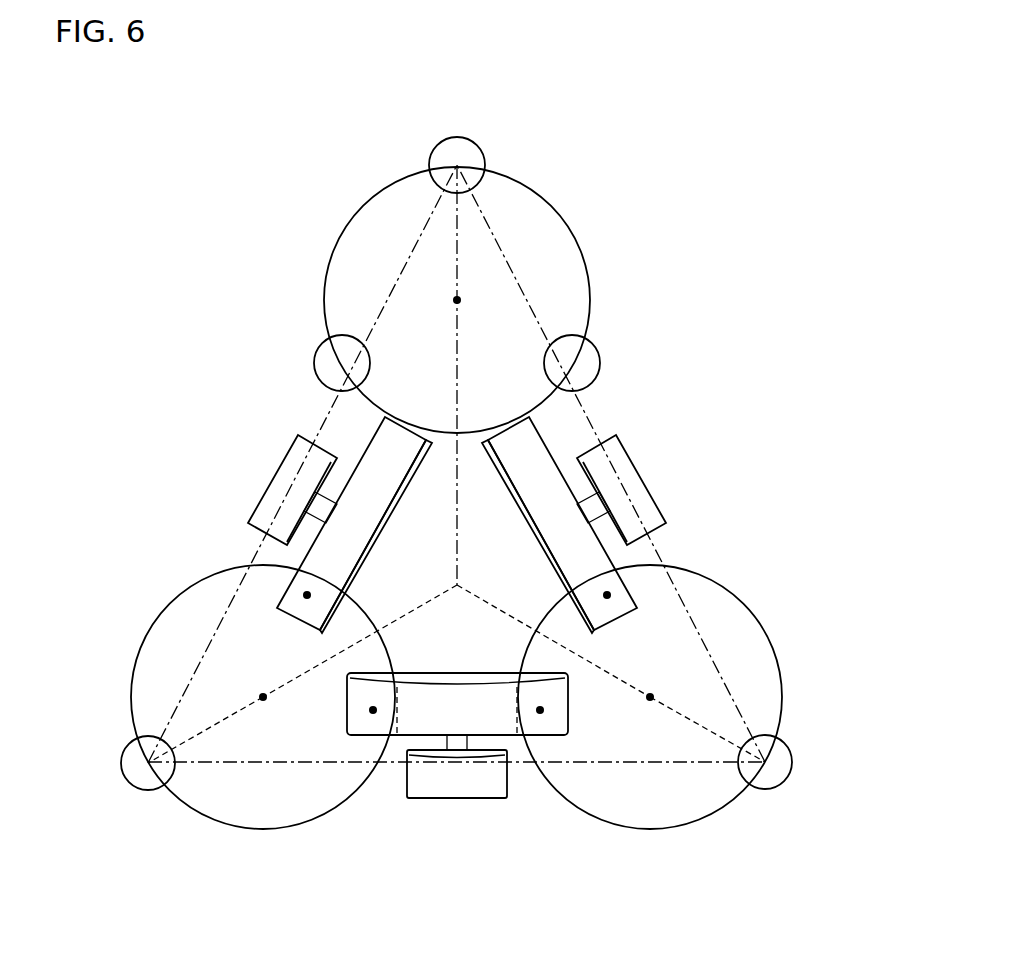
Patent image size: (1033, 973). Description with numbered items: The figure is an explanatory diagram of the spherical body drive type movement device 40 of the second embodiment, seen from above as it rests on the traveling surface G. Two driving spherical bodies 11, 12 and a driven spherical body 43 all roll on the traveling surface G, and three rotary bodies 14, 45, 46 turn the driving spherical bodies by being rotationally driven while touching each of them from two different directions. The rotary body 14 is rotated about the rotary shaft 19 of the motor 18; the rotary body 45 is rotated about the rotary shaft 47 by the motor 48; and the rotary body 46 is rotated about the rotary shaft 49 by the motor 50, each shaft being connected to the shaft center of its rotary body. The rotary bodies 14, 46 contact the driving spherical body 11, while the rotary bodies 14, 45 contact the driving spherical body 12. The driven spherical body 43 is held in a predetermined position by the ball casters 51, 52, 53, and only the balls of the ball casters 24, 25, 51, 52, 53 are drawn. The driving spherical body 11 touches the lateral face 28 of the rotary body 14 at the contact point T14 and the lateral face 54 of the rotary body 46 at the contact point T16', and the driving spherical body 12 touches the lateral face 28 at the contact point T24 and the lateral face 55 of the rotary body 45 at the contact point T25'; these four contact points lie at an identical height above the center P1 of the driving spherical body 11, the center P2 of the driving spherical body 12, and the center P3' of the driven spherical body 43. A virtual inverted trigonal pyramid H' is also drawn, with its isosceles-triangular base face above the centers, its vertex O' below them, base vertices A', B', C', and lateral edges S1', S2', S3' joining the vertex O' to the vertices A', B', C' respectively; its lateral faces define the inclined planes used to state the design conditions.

The spherical body drive type movement device 40 is at (692, 126).
The driven spherical body 43 is at (511, 188).
The ball caster 51 is at (458, 150).
The ball caster 52 is at (323, 345).
The ball caster 53 is at (598, 357).
The driving spherical body 11 is at (270, 812).
The driving spherical body 12 is at (690, 812).
The ball caster 24 is at (137, 773).
The ball caster 25 is at (778, 773).
The rotary body 46 is at (350, 460).
The rotary body 45 is at (622, 558).
The motor 50 is at (298, 462).
The motor 48 is at (622, 468).
The rotary shaft 49 is at (307, 502).
The rotary shaft 47 is at (600, 505).
The lateral face 54 is at (350, 583).
The lateral face 55 is at (597, 537).
The rotary body 14 is at (517, 742).
The motor 18 is at (437, 785).
The rotary shaft 19 is at (458, 750).
The lateral face 28 is at (396, 737).
The traveling surface G is at (822, 504).
The vertex C' is at (433, 112).
The center of the driven spherical body P3' is at (544, 234).
The lateral edge S3' is at (555, 292).
The virtual inverted trigonal pyramid H' is at (307, 354).
The contact point T25' is at (719, 575).
The vertex O' is at (316, 548).
The contact point T16' is at (192, 596).
The lateral edge S2' is at (734, 646).
The center of the driving spherical body P2 is at (655, 696).
The vertex A' is at (101, 725).
The vertex B' is at (742, 845).
The center of the driving spherical body P1 is at (255, 703).
The lateral edge S1' is at (265, 746).
The contact point T14 is at (373, 710).
The contact point T24 is at (540, 710).